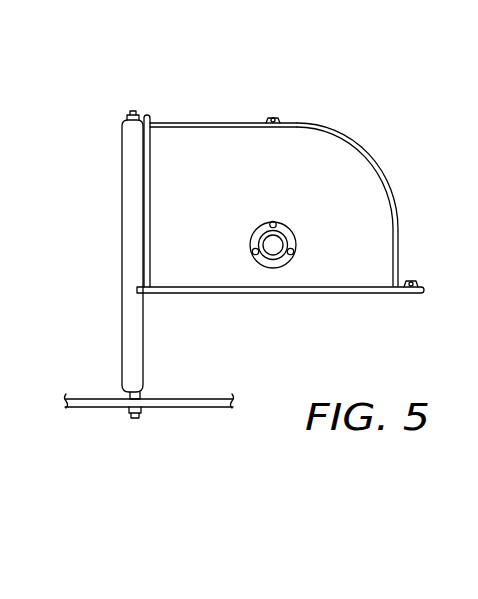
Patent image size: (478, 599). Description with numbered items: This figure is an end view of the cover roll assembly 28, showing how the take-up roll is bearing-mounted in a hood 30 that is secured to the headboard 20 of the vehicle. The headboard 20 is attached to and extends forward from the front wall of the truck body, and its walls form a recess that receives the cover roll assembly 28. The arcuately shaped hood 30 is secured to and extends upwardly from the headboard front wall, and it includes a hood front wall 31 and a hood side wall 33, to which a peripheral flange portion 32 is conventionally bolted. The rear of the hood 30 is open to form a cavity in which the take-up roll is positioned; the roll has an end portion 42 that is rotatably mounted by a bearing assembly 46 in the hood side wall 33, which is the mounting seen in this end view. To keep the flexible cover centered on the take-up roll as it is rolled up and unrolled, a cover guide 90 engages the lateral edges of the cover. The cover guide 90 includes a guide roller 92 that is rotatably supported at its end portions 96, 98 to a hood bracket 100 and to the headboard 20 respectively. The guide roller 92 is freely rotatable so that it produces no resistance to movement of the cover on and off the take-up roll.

The headboard 20 is at (86, 428).
The cover roll assembly 28 is at (218, 114).
The hood 30 is at (243, 126).
The hood front wall 31 is at (369, 160).
The peripheral flange portion 32 is at (403, 282).
The hood side wall 33 is at (292, 176).
The end portion of take-up roll 42 is at (276, 245).
The bearing assembly 46 is at (262, 231).
The cover guide 90 is at (108, 148).
The guide roller 92 is at (122, 272).
The end portion of guide roller 96 is at (123, 121).
The end portion of guide roller 98 is at (130, 396).
The hood bracket 100 is at (148, 114).